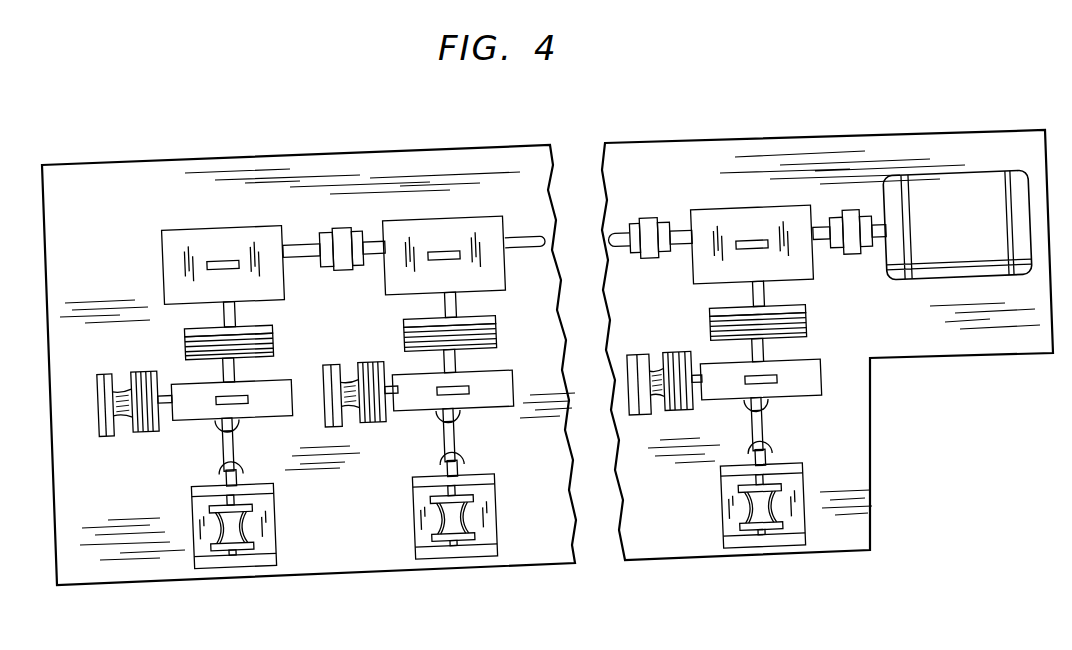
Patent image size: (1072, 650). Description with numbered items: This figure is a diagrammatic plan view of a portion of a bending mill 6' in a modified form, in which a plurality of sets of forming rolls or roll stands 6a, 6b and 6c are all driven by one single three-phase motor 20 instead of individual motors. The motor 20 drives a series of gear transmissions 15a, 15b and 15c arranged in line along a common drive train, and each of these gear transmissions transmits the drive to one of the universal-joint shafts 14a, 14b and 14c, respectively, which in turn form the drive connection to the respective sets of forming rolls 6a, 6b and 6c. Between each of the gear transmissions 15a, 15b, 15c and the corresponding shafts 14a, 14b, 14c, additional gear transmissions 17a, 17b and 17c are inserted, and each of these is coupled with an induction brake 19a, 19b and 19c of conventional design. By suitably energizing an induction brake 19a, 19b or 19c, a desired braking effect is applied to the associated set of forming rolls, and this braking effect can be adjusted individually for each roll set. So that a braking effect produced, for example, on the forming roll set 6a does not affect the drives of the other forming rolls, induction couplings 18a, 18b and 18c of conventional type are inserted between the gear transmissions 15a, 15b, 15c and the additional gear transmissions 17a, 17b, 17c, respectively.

The bending mill 6' is at (603, 583).
The set of forming rolls 6a is at (258, 553).
The set of forming rolls 6b is at (454, 541).
The set of forming rolls 6c is at (762, 528).
The universal-joint shaft 14a is at (229, 453).
The universal-joint shaft 14b is at (486, 442).
The universal-joint shaft 14c is at (788, 431).
The gear transmission 15a is at (185, 238).
The gear transmission 15b is at (446, 249).
The gear transmission 15c is at (753, 240).
The additional gear transmission 17a is at (287, 383).
The additional gear transmission 17b is at (472, 378).
The additional gear transmission 17c is at (779, 374).
The induction coupling 18a is at (186, 331).
The induction coupling 18b is at (475, 340).
The induction coupling 18c is at (782, 329).
The induction brake 19a is at (98, 417).
The induction brake 19b is at (341, 402).
The induction brake 19c is at (661, 401).
The 3-phase motor 20 is at (968, 173).